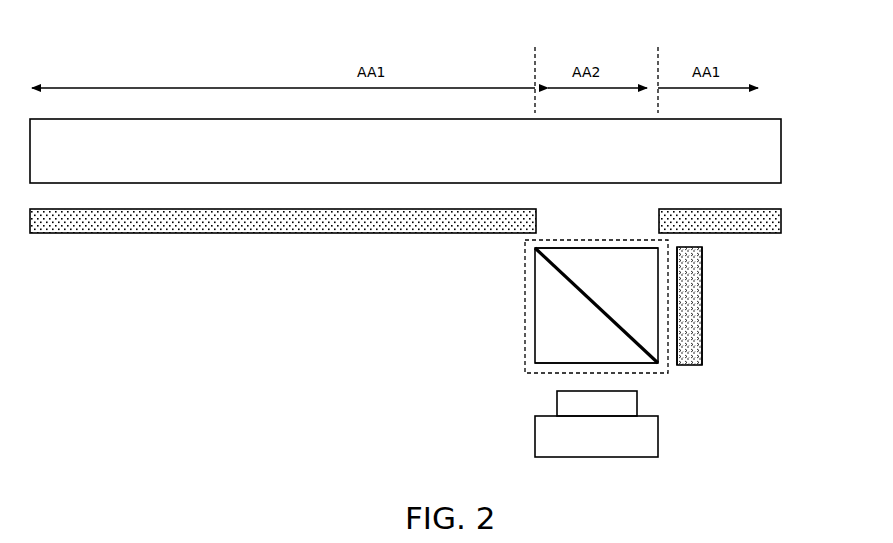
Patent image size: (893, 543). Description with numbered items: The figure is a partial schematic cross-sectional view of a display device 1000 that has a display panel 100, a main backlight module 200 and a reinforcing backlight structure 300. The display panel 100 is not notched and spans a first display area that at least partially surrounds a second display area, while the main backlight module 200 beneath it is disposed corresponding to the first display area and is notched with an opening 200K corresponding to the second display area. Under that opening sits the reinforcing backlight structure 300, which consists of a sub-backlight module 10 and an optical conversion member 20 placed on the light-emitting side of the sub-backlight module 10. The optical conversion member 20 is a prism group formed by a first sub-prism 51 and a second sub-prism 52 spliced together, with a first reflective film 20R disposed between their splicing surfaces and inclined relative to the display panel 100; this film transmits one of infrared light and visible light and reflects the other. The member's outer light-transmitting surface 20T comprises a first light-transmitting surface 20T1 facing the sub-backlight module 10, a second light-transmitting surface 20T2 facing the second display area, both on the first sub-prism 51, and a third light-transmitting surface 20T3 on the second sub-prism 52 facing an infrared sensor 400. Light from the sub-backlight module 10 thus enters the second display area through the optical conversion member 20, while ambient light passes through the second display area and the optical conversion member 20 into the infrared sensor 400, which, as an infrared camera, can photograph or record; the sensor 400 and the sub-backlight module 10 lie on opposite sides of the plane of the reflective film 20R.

The display device 1000 is at (769, 31).
The display panel 100 is at (768, 150).
The opening 200K is at (620, 220).
The main backlight module 200 is at (768, 222).
The optical conversion member 20 is at (672, 242).
The sub-backlight module 10 is at (693, 281).
The first light-transmitting surface 20T1 is at (660, 309).
The first sub-prism 51 is at (660, 337).
The second sub-prism 52 is at (560, 343).
The first reflective film 20R is at (560, 277).
The second light-transmitting surface 20T2 is at (560, 243).
The third light-transmitting surface 20T3 is at (560, 363).
The infrared sensor 400 is at (660, 427).
The reinforcing backlight structure 300 is at (230, 273).
The light-transmitting surface 20T is at (230, 341).